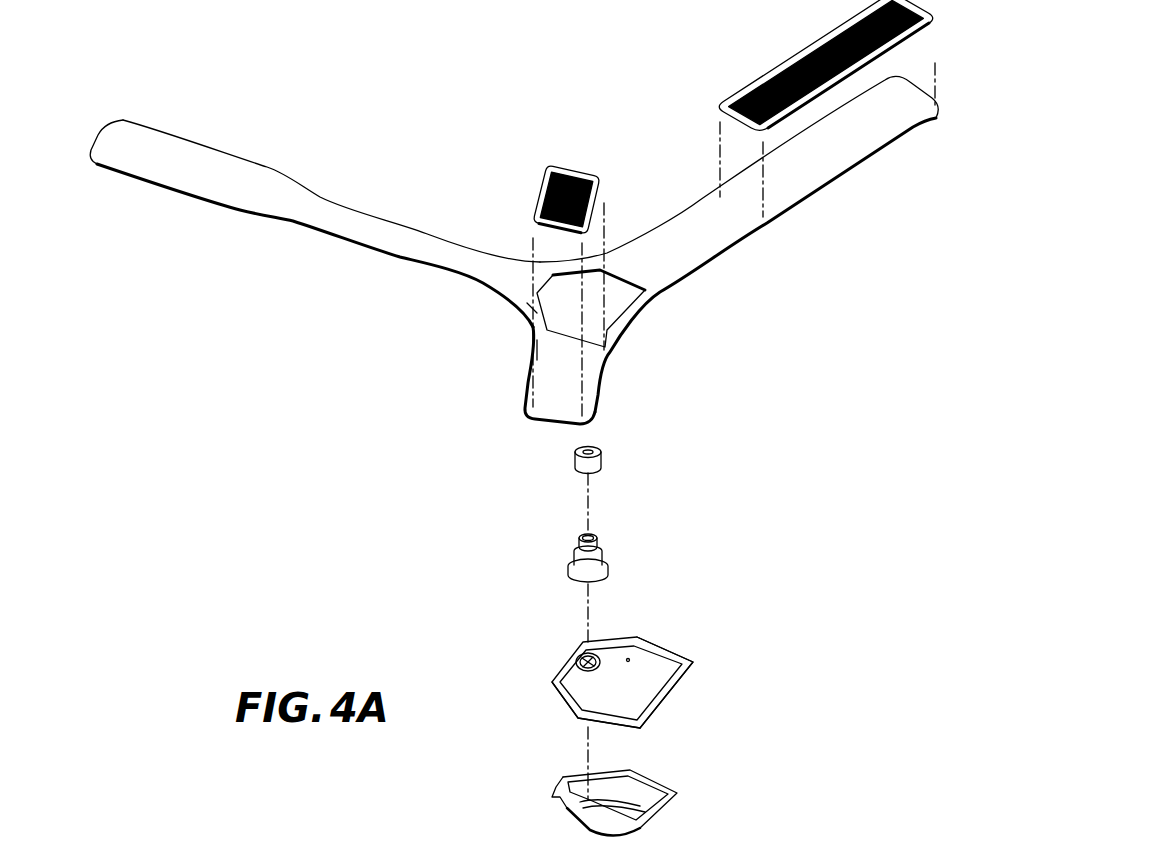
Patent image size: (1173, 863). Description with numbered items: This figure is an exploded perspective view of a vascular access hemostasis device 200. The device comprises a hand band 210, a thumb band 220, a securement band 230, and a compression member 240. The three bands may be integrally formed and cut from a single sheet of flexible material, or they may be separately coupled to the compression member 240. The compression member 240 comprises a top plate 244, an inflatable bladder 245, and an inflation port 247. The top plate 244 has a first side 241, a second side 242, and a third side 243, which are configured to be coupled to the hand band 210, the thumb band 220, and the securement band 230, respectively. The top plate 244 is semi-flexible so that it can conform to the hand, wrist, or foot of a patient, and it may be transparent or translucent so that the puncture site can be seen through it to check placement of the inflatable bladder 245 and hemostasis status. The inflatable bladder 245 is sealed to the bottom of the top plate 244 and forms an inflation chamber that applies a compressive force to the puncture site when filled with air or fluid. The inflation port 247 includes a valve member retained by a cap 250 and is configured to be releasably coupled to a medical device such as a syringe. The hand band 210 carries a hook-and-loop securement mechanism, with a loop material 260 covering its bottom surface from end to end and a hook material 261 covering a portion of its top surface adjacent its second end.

The hemostasis device 200 is at (352, 147).
The hand band 210 is at (762, 240).
The thumb band 220 is at (270, 232).
The securement band 230 is at (614, 378).
The loop material 260 is at (860, 170).
The hook material 261 is at (547, 165).
The cap 250 is at (602, 462).
The compression member 240 is at (538, 546).
The inflation port 247 is at (610, 553).
The first side 241 is at (657, 642).
The second side 242 is at (573, 657).
The third side 243 is at (578, 720).
The top plate 244 is at (693, 662).
The inflatable bladder 245 is at (680, 793).